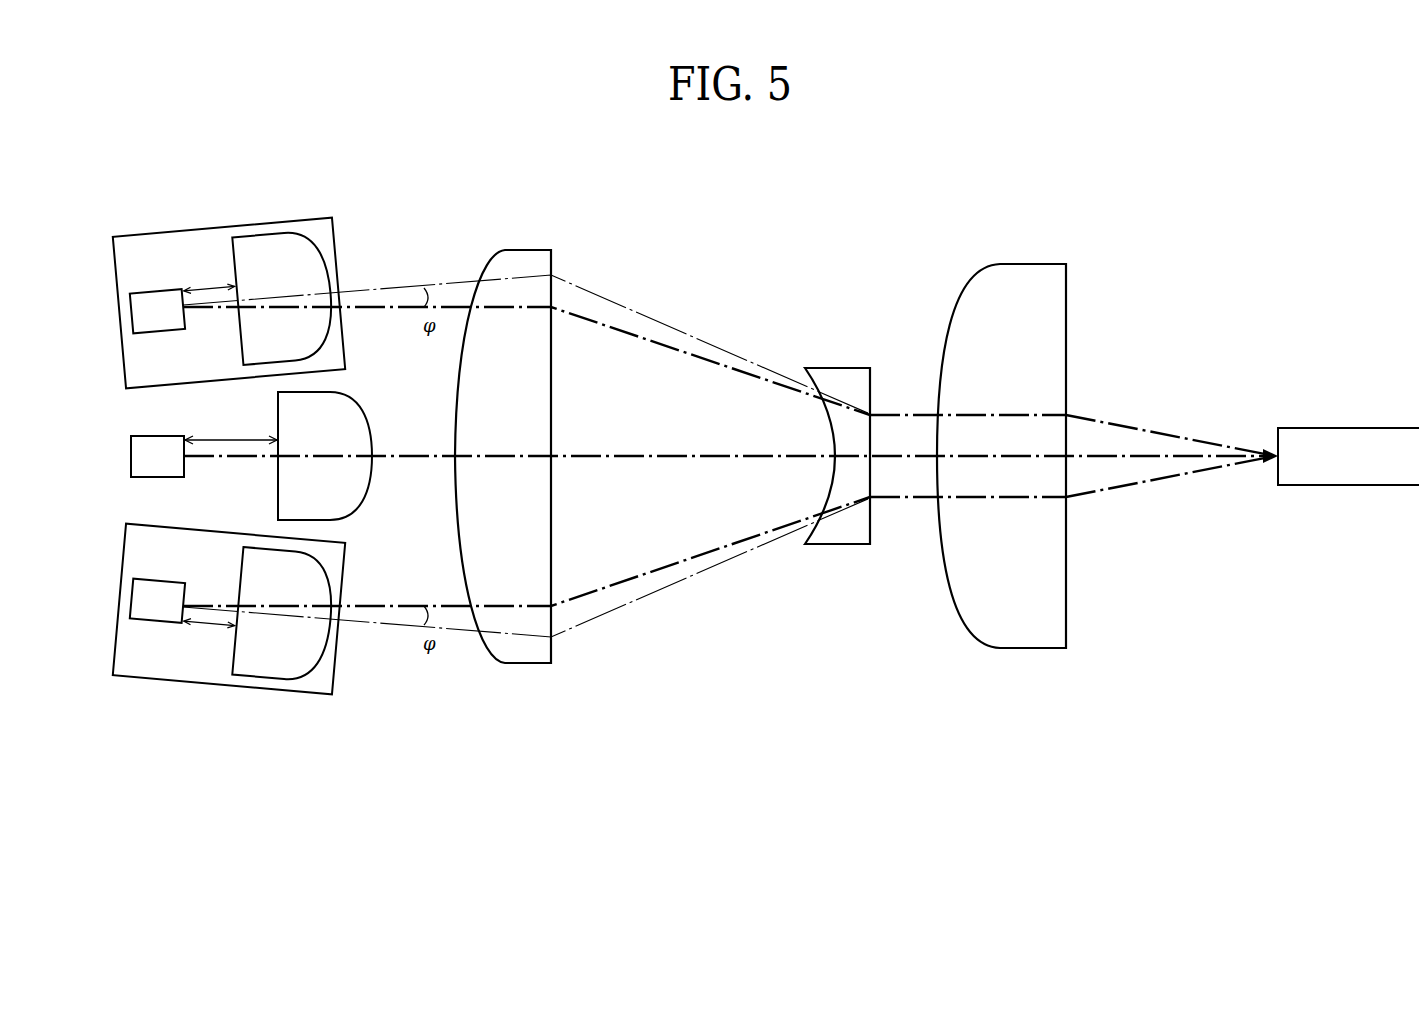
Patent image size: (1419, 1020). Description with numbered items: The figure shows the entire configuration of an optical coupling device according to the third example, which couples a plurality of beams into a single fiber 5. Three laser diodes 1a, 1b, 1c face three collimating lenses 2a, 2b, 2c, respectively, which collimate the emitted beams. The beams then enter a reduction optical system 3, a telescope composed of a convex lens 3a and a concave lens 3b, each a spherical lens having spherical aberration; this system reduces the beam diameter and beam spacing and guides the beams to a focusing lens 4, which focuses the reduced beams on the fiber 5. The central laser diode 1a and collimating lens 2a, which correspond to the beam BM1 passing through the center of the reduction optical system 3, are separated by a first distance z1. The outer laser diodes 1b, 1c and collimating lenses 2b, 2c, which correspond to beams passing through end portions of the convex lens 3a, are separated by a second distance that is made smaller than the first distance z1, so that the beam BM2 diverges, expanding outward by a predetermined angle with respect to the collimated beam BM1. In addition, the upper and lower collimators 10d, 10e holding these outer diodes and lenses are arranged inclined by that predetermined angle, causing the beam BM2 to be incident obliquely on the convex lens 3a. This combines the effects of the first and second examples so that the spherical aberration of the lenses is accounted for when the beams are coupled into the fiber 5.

The collimator 10d is at (199, 282).
The collimator 10e is at (198, 630).
The laser diode 1a is at (131, 456).
The laser diode 1b is at (131, 300).
The laser diode 1c is at (131, 600).
The collimating lens 2a is at (364, 490).
The collimating lens 2b is at (310, 237).
The collimating lens 2c is at (311, 672).
The reduction optical system 3 is at (760, 418).
The convex lens 3a is at (553, 253).
The concave lens 3b is at (837, 425).
The focusing lens 4 is at (1028, 264).
The fiber 5 is at (1323, 428).
The beam BM1 is at (403, 330).
The beam BM2 is at (392, 292).
The first distance z1 is at (231, 430).